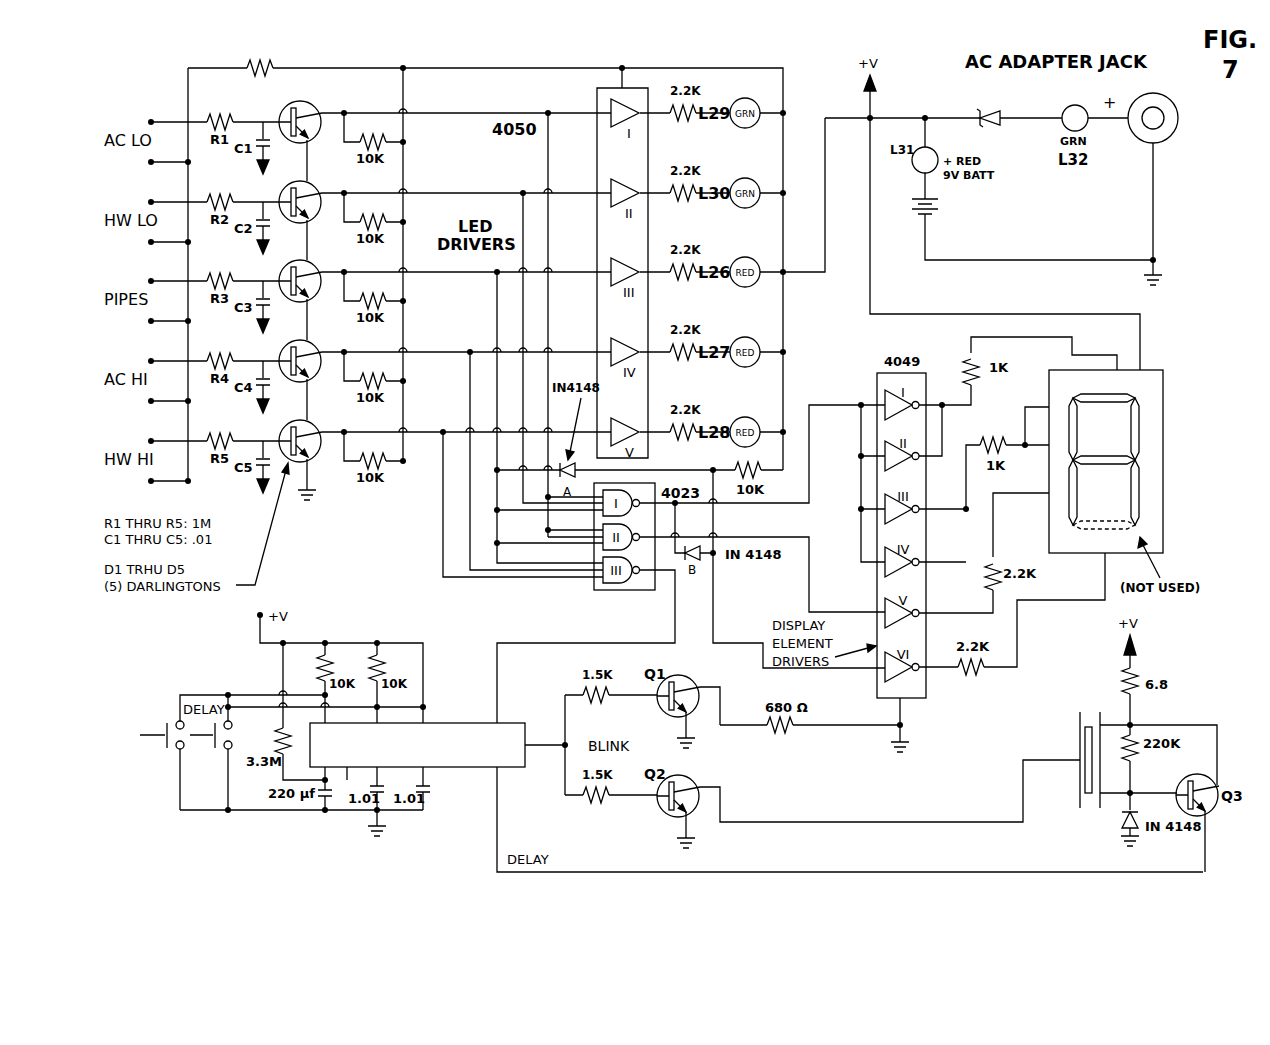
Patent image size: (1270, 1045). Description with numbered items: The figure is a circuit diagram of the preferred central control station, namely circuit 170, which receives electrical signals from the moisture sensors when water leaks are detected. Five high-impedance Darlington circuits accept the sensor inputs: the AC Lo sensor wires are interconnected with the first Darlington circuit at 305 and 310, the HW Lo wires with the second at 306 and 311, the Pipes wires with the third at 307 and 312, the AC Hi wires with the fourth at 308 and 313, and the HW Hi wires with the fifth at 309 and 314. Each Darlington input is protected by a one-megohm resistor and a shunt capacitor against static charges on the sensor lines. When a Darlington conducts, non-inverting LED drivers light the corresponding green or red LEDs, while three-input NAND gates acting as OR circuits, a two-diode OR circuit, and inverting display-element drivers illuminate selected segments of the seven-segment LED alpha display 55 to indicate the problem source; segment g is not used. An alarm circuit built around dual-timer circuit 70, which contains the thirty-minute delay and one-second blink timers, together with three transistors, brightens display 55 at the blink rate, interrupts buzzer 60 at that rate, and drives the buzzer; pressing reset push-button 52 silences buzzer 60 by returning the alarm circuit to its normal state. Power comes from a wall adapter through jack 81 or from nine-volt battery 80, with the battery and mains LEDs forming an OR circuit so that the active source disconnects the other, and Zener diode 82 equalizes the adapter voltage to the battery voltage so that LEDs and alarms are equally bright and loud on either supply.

The circuit 170 is at (802, 56).
The Darlington circuit D-1 connection point 305 is at (150, 122).
The Darlington circuit D-1 connection point 310 is at (151, 162).
The Darlington circuit D-2 connection point 306 is at (150, 202).
The Darlington circuit D-2 connection point 311 is at (151, 242).
The Darlington circuit D-3 connection point 307 is at (150, 281).
The Darlington circuit D-3 connection point 312 is at (151, 321).
The Darlington circuit D-4 connection point 308 is at (150, 361).
The Darlington circuit D-4 connection point 313 is at (151, 401).
The Darlington circuit D-5 connection point 309 is at (150, 441).
The Darlington circuit D-5 connection point 314 is at (151, 481).
The 9-volt battery 80 is at (917, 218).
The jack 81 is at (1162, 124).
The Zener diode 82 is at (999, 117).
The seven-segment LED alpha display 55 is at (1180, 531).
The reset push-button 52 is at (177, 747).
The dual-timer circuit 70 is at (382, 786).
The buzzer 60 is at (1081, 761).